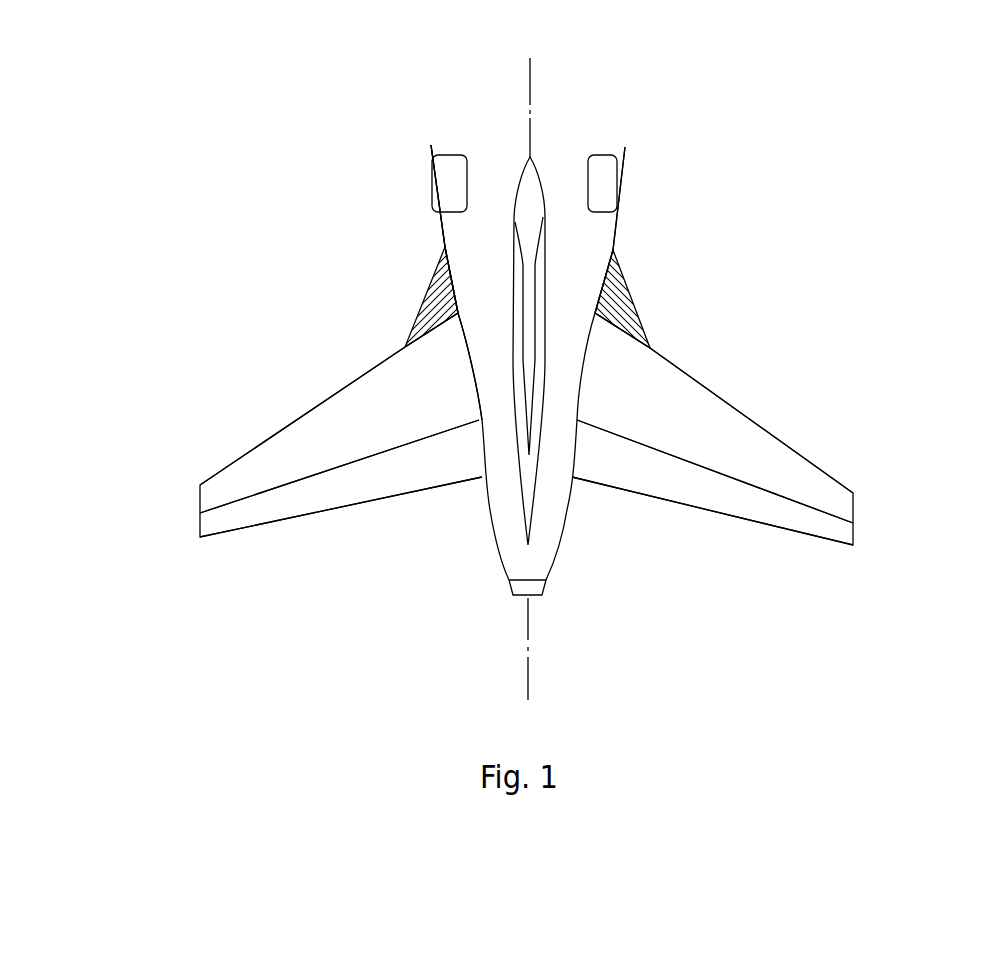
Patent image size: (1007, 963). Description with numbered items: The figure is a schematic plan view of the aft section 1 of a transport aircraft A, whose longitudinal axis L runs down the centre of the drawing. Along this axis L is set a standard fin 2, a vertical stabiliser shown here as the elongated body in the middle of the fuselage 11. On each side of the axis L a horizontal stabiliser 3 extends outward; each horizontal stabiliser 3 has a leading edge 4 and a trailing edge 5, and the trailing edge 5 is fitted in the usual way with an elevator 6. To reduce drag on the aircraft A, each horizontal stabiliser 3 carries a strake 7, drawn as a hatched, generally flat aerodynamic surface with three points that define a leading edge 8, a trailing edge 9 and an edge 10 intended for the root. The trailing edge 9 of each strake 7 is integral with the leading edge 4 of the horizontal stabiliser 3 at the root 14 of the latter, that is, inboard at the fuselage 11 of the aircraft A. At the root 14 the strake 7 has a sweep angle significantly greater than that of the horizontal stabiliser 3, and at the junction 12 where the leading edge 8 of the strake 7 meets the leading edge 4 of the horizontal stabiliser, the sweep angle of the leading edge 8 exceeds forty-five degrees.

The aft section 1 is at (253, 208).
The fin 2 is at (525, 477).
The horizontal stabiliser 3 is at (278, 535).
The leading edge 4 is at (245, 435).
The trailing edge 5 is at (332, 527).
The elevator 6 is at (402, 485).
The strake 7 is at (423, 300).
The leading edge 8 is at (420, 258).
The trailing edge 9 is at (428, 340).
The edge 10 is at (455, 257).
The fuselage 11 is at (447, 210).
The junction 12 is at (403, 347).
The root 14 is at (460, 338).
The aircraft A is at (607, 180).
The longitudinal axis L is at (528, 672).